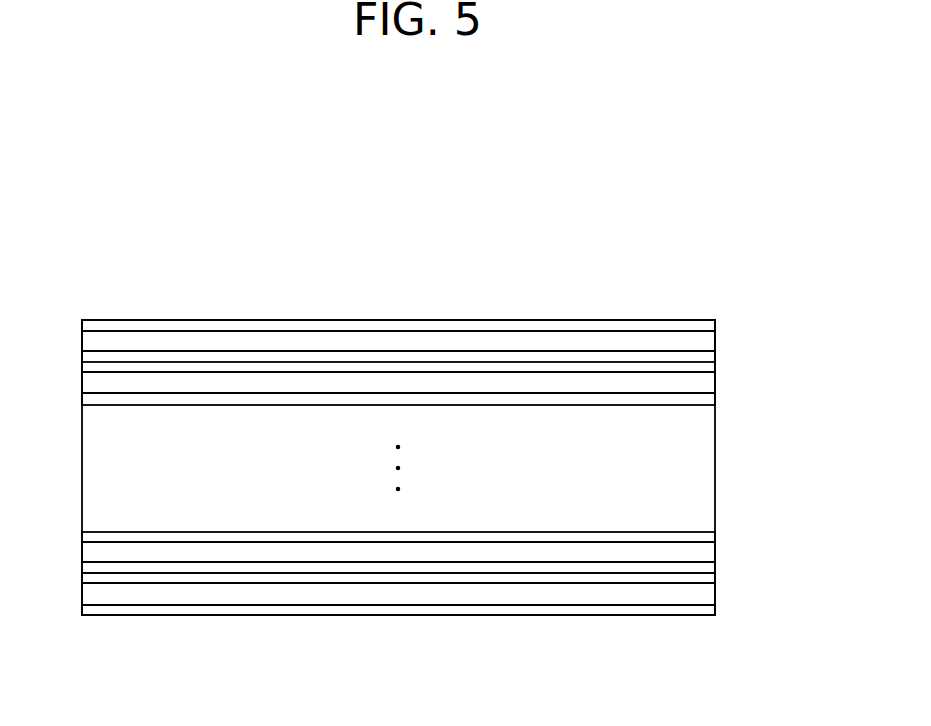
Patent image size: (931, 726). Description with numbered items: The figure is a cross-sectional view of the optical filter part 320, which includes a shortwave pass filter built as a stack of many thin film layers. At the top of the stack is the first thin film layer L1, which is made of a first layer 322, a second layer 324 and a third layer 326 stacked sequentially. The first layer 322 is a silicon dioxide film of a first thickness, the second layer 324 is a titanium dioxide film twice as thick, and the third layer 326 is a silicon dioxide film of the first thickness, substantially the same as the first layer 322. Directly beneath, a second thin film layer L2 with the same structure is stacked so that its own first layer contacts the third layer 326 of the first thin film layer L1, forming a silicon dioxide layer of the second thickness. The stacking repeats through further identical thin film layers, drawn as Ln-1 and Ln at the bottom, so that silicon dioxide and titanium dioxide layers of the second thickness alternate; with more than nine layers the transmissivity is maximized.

The optical filter part 320 is at (416, 191).
The first layer 322 is at (715, 322).
The second layer 324 is at (715, 345).
The third layer 326 is at (715, 362).
The first thin film layer L1 is at (789, 302).
The second thin film layer L2 is at (718, 363).
The (n-1)th layer group Ln-1 is at (718, 533).
The nth layer group Ln is at (718, 574).